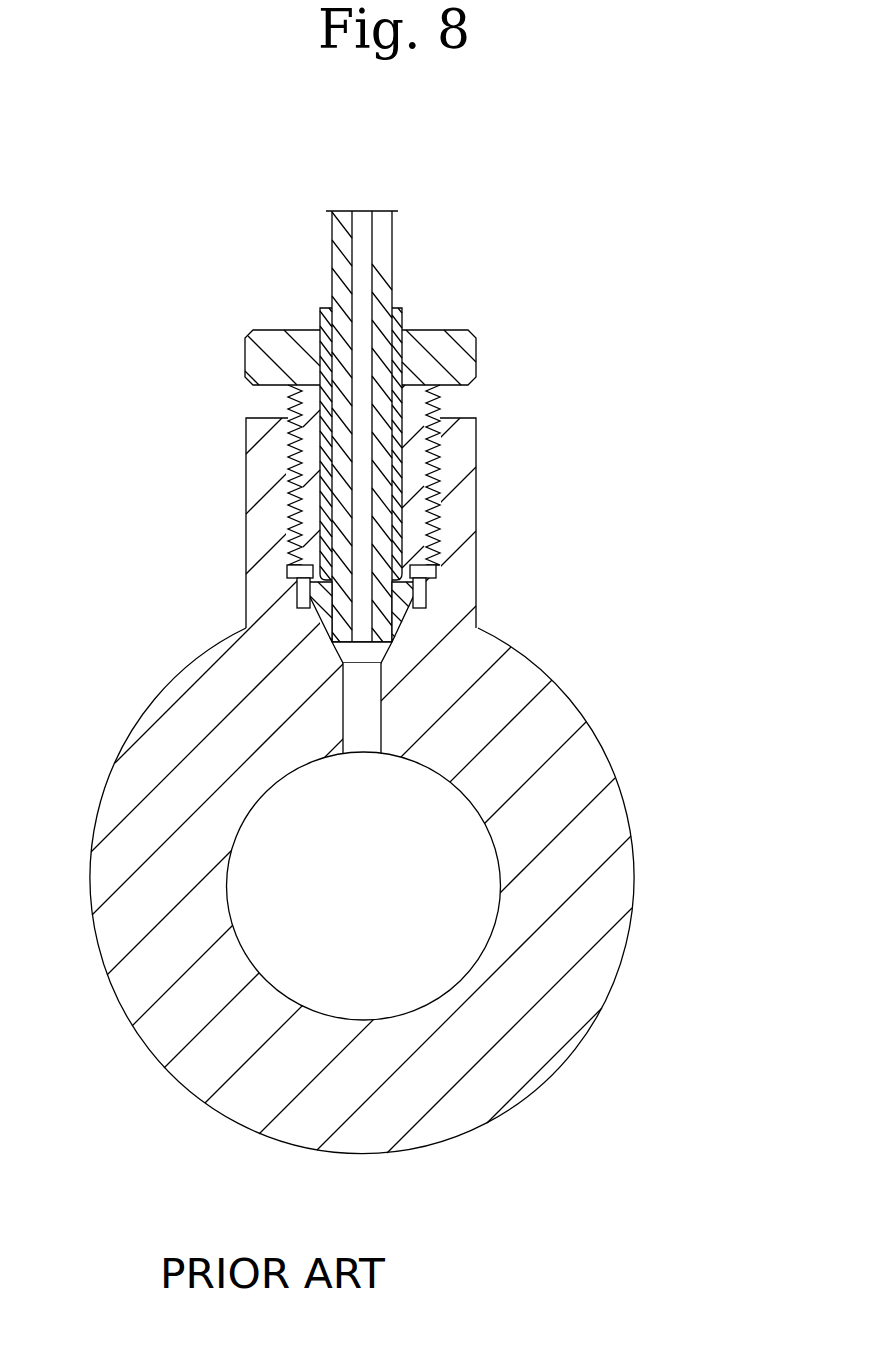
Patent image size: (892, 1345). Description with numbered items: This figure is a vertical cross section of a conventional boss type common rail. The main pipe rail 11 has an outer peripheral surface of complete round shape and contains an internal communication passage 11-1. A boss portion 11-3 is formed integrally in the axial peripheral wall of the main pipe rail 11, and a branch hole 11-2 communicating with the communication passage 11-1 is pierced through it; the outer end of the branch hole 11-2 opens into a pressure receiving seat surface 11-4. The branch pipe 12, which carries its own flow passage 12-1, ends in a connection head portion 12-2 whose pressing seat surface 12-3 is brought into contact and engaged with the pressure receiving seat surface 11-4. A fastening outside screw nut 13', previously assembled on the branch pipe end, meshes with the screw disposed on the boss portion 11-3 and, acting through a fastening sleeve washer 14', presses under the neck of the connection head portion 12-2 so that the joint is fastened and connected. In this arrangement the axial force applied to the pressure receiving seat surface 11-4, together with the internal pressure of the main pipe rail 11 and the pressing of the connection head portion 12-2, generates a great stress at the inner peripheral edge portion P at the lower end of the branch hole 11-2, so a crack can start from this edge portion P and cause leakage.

The main pipe rail 11 is at (617, 813).
The communication passage 11-1 is at (470, 958).
The branch hole 11-2 is at (384, 722).
The boss portion 11-3 is at (630, 473).
The pressure receiving seat surface 11-4 is at (394, 647).
The branch pipe 12 is at (389, 240).
The flow passage 12-1 is at (349, 268).
The connection head portion 12-2 is at (320, 592).
The pressing seat surface 12-3 is at (316, 618).
The fastening outside screw nut 13' is at (432, 357).
The fastening sleeve washer 14' is at (434, 419).
The inner peripheral edge portion P is at (359, 792).